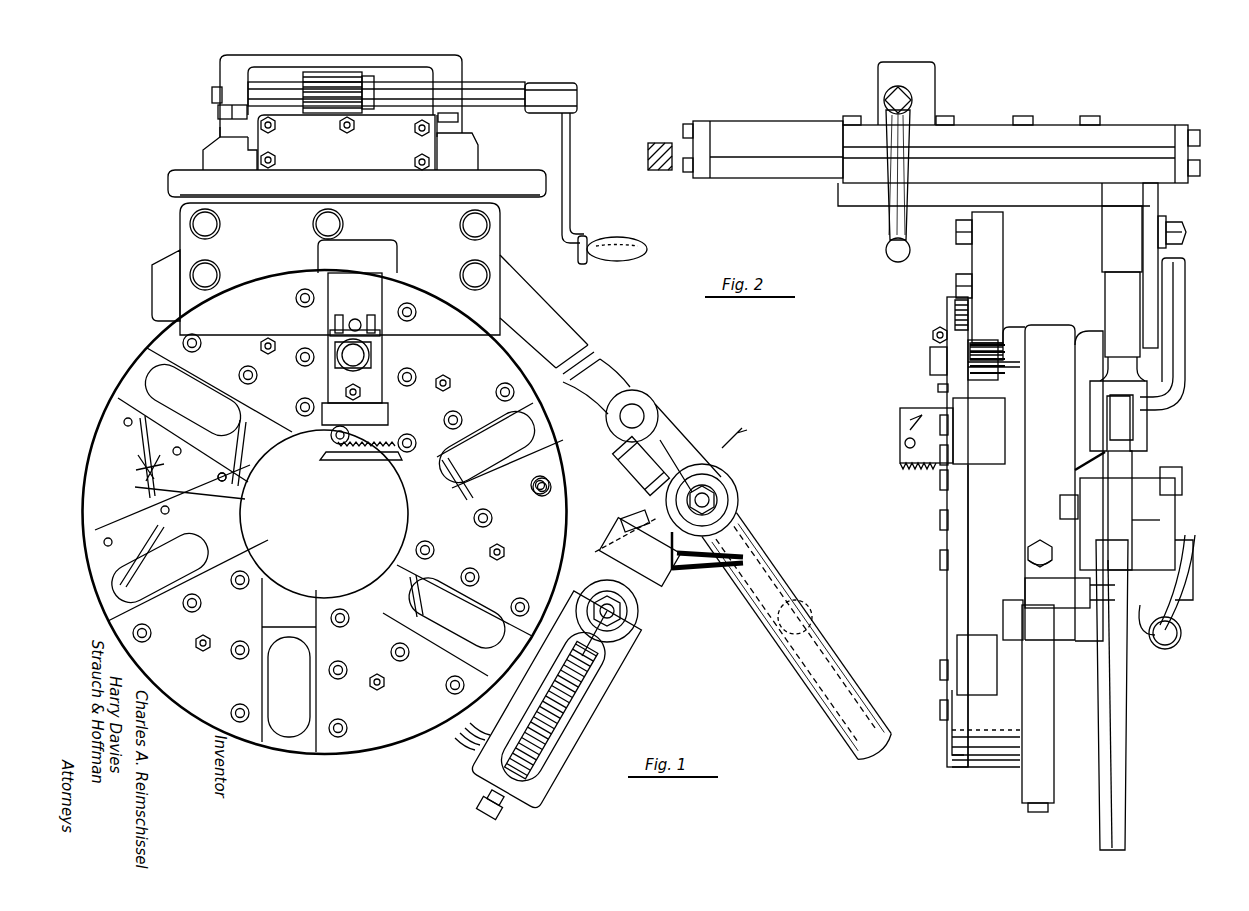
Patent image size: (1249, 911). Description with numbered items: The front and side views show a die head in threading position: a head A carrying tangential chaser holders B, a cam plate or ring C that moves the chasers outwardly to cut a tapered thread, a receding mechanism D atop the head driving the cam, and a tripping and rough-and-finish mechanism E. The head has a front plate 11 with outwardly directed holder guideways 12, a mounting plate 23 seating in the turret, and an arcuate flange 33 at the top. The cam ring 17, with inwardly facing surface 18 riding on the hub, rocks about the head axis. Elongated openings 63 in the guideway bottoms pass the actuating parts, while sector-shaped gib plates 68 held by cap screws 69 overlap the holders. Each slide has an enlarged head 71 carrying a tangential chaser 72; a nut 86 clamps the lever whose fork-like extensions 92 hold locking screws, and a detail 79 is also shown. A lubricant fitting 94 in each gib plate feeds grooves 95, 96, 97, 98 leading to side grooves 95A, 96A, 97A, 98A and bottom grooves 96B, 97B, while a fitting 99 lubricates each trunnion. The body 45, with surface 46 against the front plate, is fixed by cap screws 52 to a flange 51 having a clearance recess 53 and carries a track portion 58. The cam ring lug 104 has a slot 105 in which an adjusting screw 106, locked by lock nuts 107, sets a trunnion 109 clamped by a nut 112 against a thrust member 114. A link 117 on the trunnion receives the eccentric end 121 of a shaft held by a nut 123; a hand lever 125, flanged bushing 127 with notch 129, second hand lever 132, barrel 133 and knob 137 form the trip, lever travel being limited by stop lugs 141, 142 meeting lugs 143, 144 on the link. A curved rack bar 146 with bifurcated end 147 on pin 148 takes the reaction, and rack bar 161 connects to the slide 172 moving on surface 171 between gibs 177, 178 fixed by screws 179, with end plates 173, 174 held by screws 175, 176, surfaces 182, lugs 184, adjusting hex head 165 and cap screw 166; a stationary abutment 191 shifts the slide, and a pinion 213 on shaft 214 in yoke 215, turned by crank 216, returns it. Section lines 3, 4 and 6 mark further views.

In FIG. 1, the front plate 11 is at (84, 488).
In FIG. 2, the front plate 11 is at (980, 532).
In FIG. 1, the holder guideways 12 is at (384, 364).
In FIG. 2, the holder guideways 12 is at (988, 405).
In FIG. 2, the cam ring 17 is at (1064, 483).
In FIG. 1, the inwardly facing surface 18 is at (405, 58).
In FIG. 2, the mounting plate 23 is at (1163, 395).
In FIG. 2, the flange 33 is at (1176, 289).
In FIG. 1, the body 45 is at (192, 198).
In FIG. 2, the body 45 is at (1044, 263).
In FIG. 1, the surface 46 is at (150, 271).
In FIG. 2, the surface 46 is at (1007, 328).
In FIG. 1, the flange 51 is at (340, 269).
In FIG. 2, the flange 51 is at (1003, 282).
In FIG. 1, the cap screws 52 is at (504, 237).
In FIG. 2, the cap screws 52 is at (955, 275).
In FIG. 1, the recess 53 is at (394, 240).
In FIG. 2, the track portion 58 is at (868, 205).
In FIG. 1, the elongated openings 63 is at (195, 412).
In FIG. 1, the gib plate 68 is at (361, 322).
In FIG. 1, the cap screws 69 is at (240, 376).
In FIG. 1, the enlarged head 71 is at (343, 468).
In FIG. 2, the enlarged head 71 is at (900, 417).
In FIG. 1, the tangential chaser 72 is at (373, 468).
In FIG. 2, the tangential chaser 72 is at (900, 470).
In FIG. 1, the pin 79 is at (331, 436).
In FIG. 1, the nut 86 is at (335, 345).
In FIG. 2, the nut 86 is at (930, 363).
In FIG. 1, the fork-like extensions 92 is at (364, 314).
In FIG. 2, the fork-like extensions 92 is at (934, 335).
In FIG. 1, the lubricant fitting 94 is at (260, 345).
In FIG. 1, the lubricant groove 95 is at (129, 531).
In FIG. 1, the lubricant groove 95A is at (123, 552).
In FIG. 1, the lubricant groove 96 is at (235, 496).
In FIG. 1, the lubricant groove 96A is at (192, 510).
In FIG. 1, the lubricant groove 96B is at (243, 537).
In FIG. 1, the lubricant groove 97 is at (214, 474).
In FIG. 1, the lubricant groove 97A is at (250, 468).
In FIG. 1, the lubricant groove 97B is at (240, 430).
In FIG. 1, the lubricant groove 98 is at (140, 445).
In FIG. 1, the lubricant groove 98A is at (118, 405).
In FIG. 1, the lubricant fitting 99 is at (347, 388).
In FIG. 2, the lubricant fitting 99 is at (938, 388).
In FIG. 1, the lug 104 is at (465, 739).
In FIG. 2, the lug 104 is at (1028, 778).
In FIG. 1, the slot 105 is at (589, 702).
In FIG. 1, the adjusting screw 106 is at (592, 665).
In FIG. 2, the adjusting screw 106 is at (1042, 540).
In FIG. 1, the lock nuts 107 is at (508, 802).
In FIG. 2, the lock nuts 107 is at (1038, 812).
In FIG. 1, the trunnion 109 is at (611, 644).
In FIG. 1, the nut 112 is at (636, 605).
In FIG. 2, the nut 112 is at (1008, 602).
In FIG. 1, the thrust member 114 is at (655, 573).
In FIG. 1, the link 117 is at (617, 534).
In FIG. 2, the link 117 is at (1085, 583).
In FIG. 1, the eccentric end portion 121 is at (721, 488).
In FIG. 1, the nut 123 is at (734, 459).
In FIG. 2, the nut 123 is at (1063, 490).
In FIG. 1, the hand lever 125 is at (778, 628).
In FIG. 2, the hand lever 125 is at (1103, 795).
In FIG. 2, the flanged bushing 127 is at (1136, 525).
In FIG. 2, the radial notch 129 is at (1175, 468).
In FIG. 2, the hand lever 132 is at (1192, 582).
In FIG. 1, the barrel 133 is at (770, 560).
In FIG. 2, the barrel 133 is at (1153, 636).
In FIG. 1, the hand knob 137 is at (808, 605).
In FIG. 2, the hand knob 137 is at (1171, 640).
In FIG. 1, the stop lug 141 is at (628, 460).
In FIG. 2, the stop lug 141 is at (1078, 469).
In FIG. 1, the stop lug 142 is at (730, 565).
In FIG. 1, the stop lug 143 is at (627, 509).
In FIG. 1, the stop lug 144 is at (718, 595).
In FIG. 1, the curved rack bar 146 is at (574, 316).
In FIG. 1, the bifurcated lower end 147 is at (635, 393).
In FIG. 1, the pin 148 is at (648, 403).
In FIG. 2, the pin 148 is at (1153, 419).
In FIG. 1, the rack bar 161 is at (170, 180).
In FIG. 2, the rack bar 161 is at (1163, 182).
In FIG. 2, the hex head 165 is at (1168, 220).
In FIG. 2, the cap screw 166 is at (1192, 232).
In FIG. 1, the upper surface 171 is at (441, 177).
In FIG. 2, the upper surface 171 is at (993, 183).
In FIG. 2, the slide 172 is at (815, 123).
In FIG. 1, the front end plate 173 is at (346, 142).
In FIG. 2, the front end plate 173 is at (698, 176).
In FIG. 2, the rear end plate 174 is at (1211, 136).
In FIG. 1, the cap screws 175 is at (276, 127).
In FIG. 2, the cap screws 175 is at (683, 126).
In FIG. 2, the cap screws 176 is at (1191, 160).
In FIG. 1, the gib 177 is at (482, 151).
In FIG. 2, the gib 177 is at (1015, 154).
In FIG. 1, the gib 178 is at (203, 157).
In FIG. 1, the cap screws 179 is at (210, 108).
In FIG. 2, the cap screws 179 is at (854, 116).
In FIG. 2, the upwardly facing surfaces 182 is at (740, 125).
In FIG. 2, the lugs 184 is at (1112, 195).
In FIG. 2, the stationary abutment 191 is at (666, 172).
In FIG. 1, the pinion 213 is at (302, 79).
In FIG. 1, the shaft 214 is at (515, 108).
In FIG. 1, the yoke 215 is at (225, 59).
In FIG. 2, the yoke 215 is at (906, 93).
In FIG. 1, the crank 216 is at (573, 177).
In FIG. 2, the crank 216 is at (892, 170).
In FIG. 1, the section line 3 is at (555, 628).
In FIG. 1, the section line 4 is at (715, 440).
In FIG. 1, the section line 6 is at (650, 445).
In FIG. 1, the head A is at (105, 389).
In FIG. 2, the head A is at (958, 498).
In FIG. 1, the tangential chaser holders B is at (394, 418).
In FIG. 2, the tangential chaser holders B is at (890, 439).
In FIG. 1, the cam plate or ring C is at (456, 737).
In FIG. 2, the receding mechanism D is at (1141, 122).
In FIG. 1, the tripping mechanism E is at (716, 462).
In FIG. 2, the tripping mechanism E is at (1115, 693).